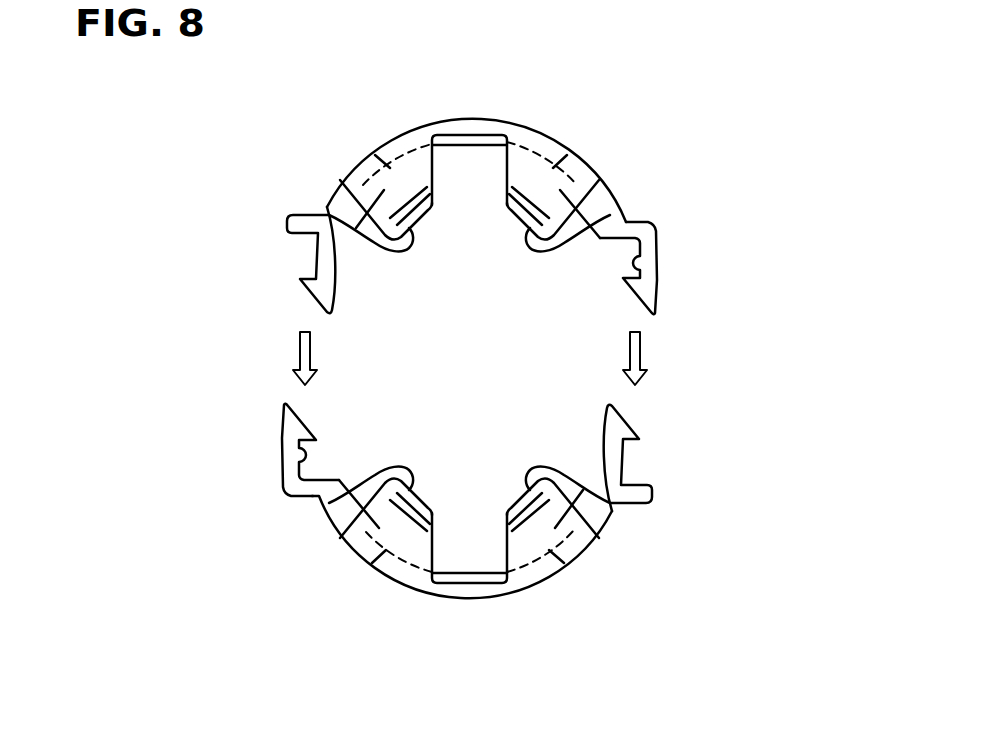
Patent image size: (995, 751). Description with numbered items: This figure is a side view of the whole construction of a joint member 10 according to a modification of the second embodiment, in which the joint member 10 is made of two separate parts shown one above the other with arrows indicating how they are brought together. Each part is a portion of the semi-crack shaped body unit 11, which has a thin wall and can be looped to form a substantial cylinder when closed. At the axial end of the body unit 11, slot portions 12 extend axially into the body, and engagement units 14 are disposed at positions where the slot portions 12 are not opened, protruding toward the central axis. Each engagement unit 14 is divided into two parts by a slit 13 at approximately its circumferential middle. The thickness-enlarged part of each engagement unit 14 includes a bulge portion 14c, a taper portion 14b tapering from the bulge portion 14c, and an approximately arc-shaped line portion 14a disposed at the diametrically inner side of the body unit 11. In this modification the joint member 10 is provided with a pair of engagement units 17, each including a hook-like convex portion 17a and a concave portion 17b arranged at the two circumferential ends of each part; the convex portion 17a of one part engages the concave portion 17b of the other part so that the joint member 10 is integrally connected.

The joint member 10 is at (575, 137).
The body unit 11 is at (338, 193).
The slot portion 12 is at (363, 217).
The slit 13 is at (503, 167).
The engagement unit 14 is at (392, 187).
The line portion 14a is at (329, 215).
The taper portion 14b is at (386, 168).
The bulge portion 14c is at (413, 193).
The engagement unit 17 is at (173, 291).
The first engagement portion 17a is at (312, 300).
The second engagement portion 17b is at (640, 268).